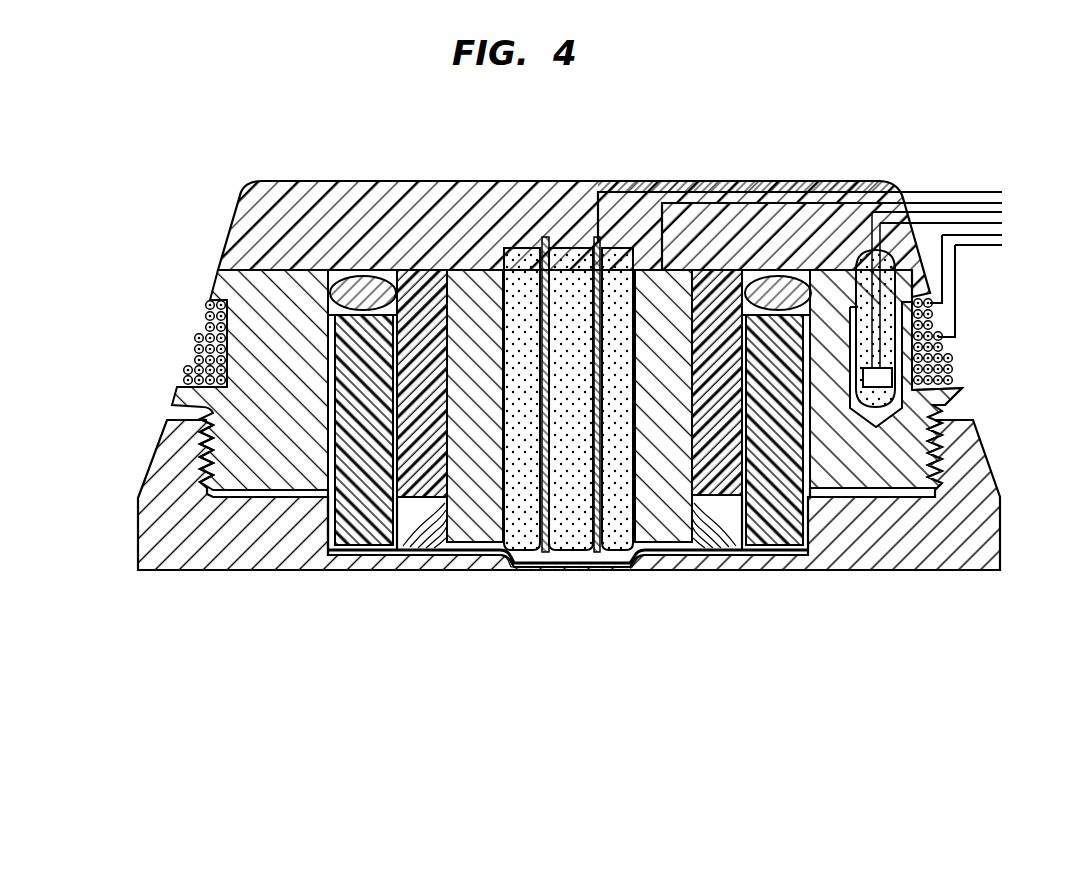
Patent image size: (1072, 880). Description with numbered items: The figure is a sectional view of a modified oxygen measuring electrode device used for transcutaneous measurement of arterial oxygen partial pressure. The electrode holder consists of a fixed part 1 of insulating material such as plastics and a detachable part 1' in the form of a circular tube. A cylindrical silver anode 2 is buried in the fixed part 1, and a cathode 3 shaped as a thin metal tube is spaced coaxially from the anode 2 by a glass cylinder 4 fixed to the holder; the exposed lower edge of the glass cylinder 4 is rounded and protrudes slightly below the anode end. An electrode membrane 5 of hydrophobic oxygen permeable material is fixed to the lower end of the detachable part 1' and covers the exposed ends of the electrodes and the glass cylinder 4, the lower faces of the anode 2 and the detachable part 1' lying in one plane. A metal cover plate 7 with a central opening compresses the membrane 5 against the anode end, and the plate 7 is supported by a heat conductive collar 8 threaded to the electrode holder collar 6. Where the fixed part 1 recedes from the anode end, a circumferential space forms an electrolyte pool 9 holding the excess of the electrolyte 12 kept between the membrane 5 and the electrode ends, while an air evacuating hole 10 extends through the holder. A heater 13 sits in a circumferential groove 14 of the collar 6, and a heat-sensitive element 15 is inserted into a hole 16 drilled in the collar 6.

The fixed part of electrode holder 1 is at (567, 334).
The detachable part of the holder 1' is at (569, 483).
The silver anode 2 is at (648, 298).
The cathode 3 is at (545, 237).
The glass cylinder 4 is at (522, 300).
The electrode membrane 5 is at (477, 562).
The electrode holder collar 6 is at (968, 397).
The metal cover plate 7 is at (697, 562).
The collar 8 is at (940, 540).
The electrolyte pool 9 is at (405, 512).
The air evacuating hole 10 is at (212, 274).
The electrolyte 12 is at (437, 545).
The heater 13 is at (950, 357).
The circumferential groove 14 is at (968, 322).
The heat-sensitive element 15 is at (896, 281).
The hole 16 is at (362, 283).